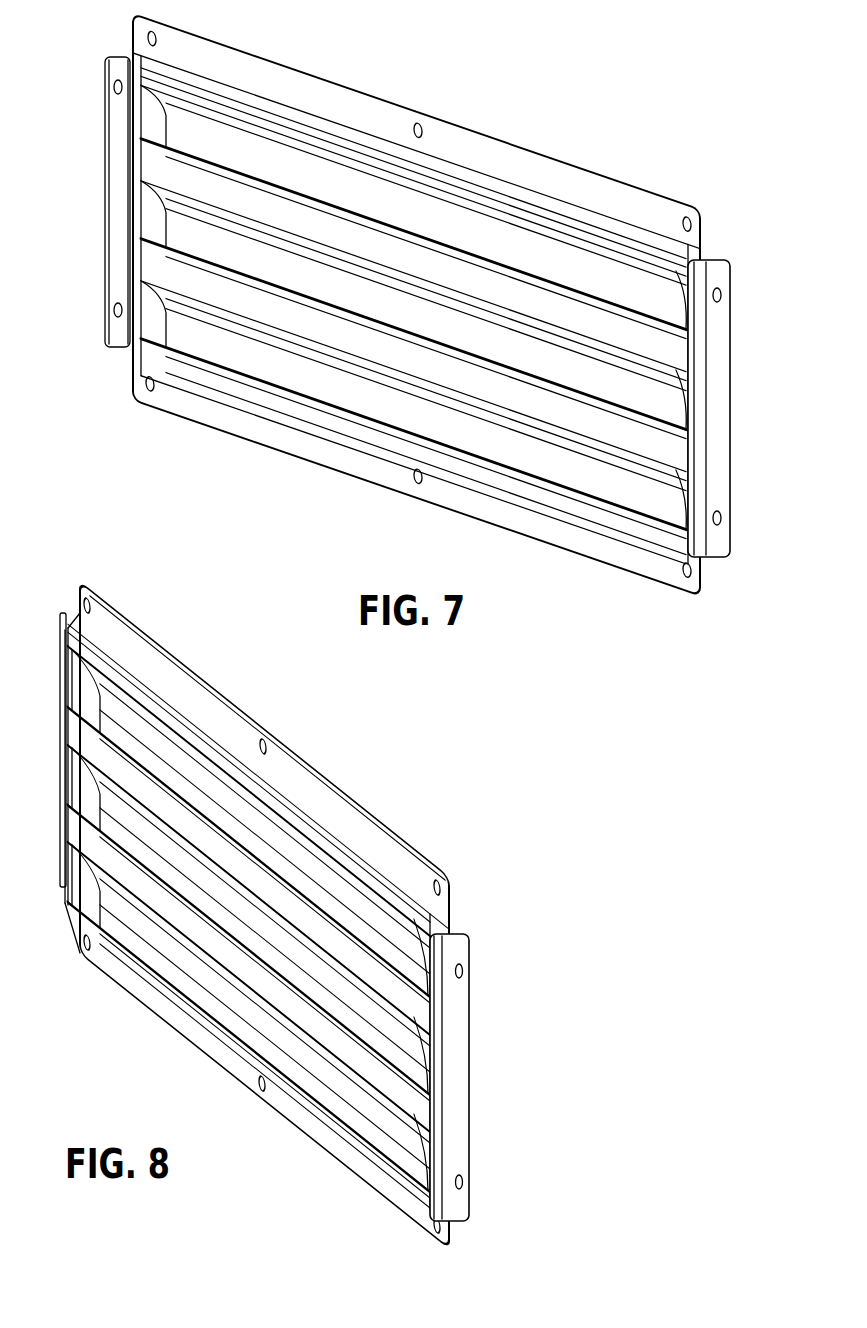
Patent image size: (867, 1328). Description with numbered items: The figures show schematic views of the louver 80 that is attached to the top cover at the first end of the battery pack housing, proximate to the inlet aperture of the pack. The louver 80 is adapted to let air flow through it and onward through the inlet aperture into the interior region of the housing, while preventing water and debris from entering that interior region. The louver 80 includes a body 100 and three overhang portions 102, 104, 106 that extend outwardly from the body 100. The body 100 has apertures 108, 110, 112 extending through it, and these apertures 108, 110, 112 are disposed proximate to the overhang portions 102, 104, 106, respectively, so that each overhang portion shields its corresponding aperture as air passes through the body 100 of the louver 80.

In FIG. 7, the louver 80 is at (622, 182).
In FIG. 8, the louver 80 is at (424, 860).
In FIG. 7, the body 100 is at (118, 122).
In FIG. 7, the overhang portion 102 is at (672, 308).
In FIG. 7, the overhang portion 104 is at (672, 408).
In FIG. 7, the overhang portion 106 is at (672, 510).
In FIG. 7, the aperture 108 is at (170, 150).
In FIG. 7, the aperture 110 is at (170, 248).
In FIG. 7, the aperture 112 is at (170, 348).